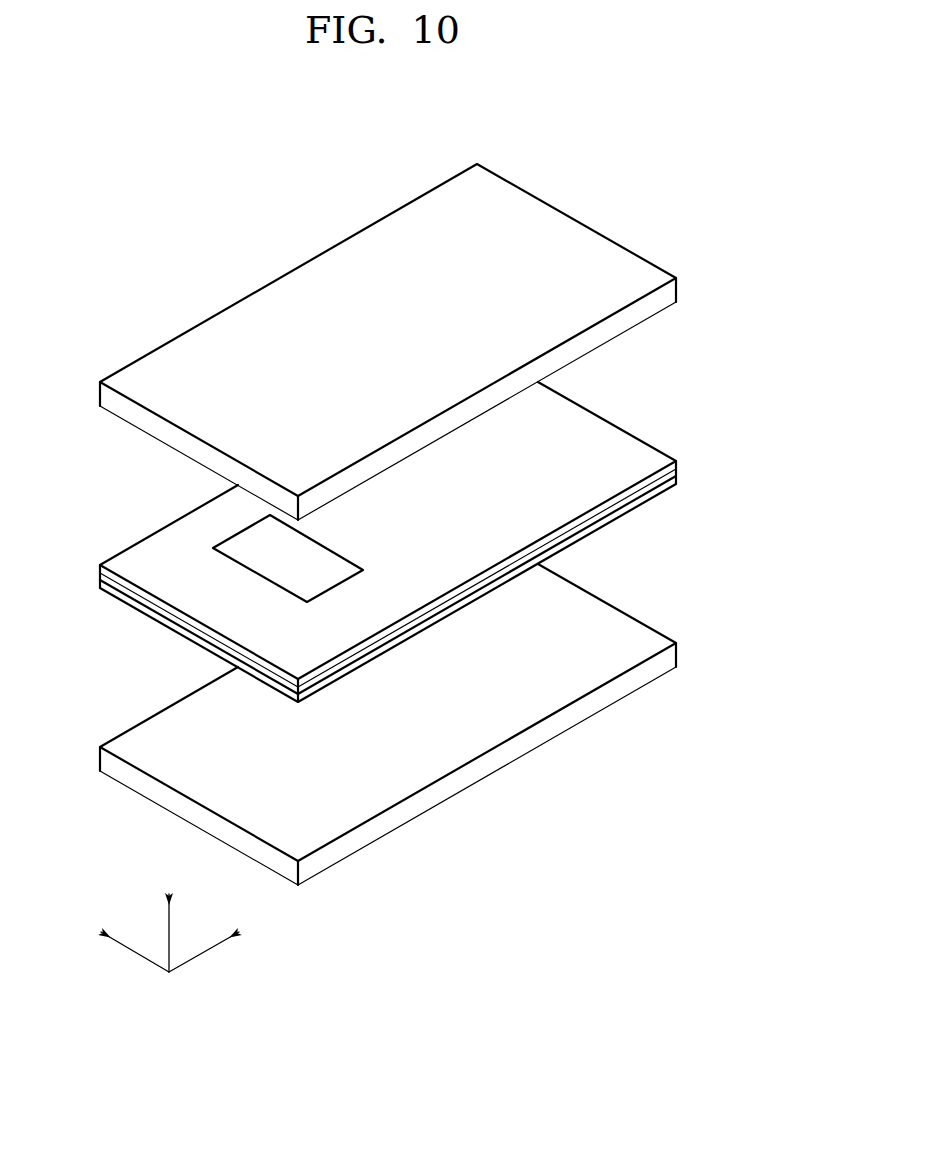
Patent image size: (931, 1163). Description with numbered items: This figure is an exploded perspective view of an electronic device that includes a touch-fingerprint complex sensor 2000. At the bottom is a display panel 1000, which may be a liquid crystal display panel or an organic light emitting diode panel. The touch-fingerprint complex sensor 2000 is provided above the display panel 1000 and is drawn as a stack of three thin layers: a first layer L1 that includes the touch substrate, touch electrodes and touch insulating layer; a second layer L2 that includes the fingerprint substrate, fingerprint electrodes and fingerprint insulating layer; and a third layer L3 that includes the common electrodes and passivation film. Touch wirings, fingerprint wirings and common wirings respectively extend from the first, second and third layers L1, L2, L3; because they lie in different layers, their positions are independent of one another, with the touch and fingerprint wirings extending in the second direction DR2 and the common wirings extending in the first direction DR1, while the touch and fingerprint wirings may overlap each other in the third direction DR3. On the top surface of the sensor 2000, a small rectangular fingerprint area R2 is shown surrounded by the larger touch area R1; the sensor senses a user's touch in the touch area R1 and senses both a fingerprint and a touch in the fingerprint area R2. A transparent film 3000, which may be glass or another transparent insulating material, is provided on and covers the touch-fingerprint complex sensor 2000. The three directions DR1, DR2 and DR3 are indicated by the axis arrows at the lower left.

The transparent film 3000 is at (657, 254).
The touch-fingerprint complex sensor 2000 is at (658, 436).
The display panel 1000 is at (658, 617).
The first layer L1 is at (677, 481).
The second layer L2 is at (677, 473).
The third layer L3 is at (677, 464).
The touch area R1 is at (367, 622).
The fingerprint area R2 is at (240, 530).
The first direction DR1 is at (229, 944).
The second direction DR2 is at (112, 944).
The third direction DR3 is at (173, 918).